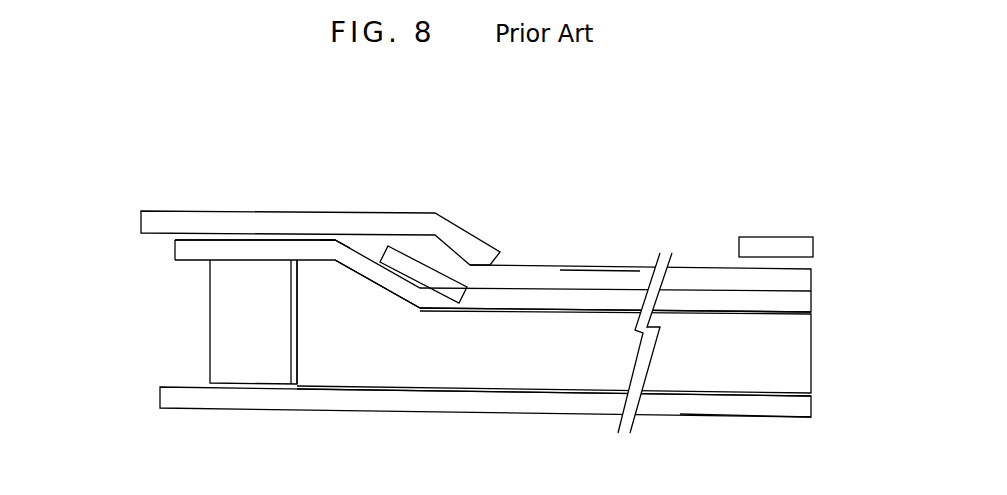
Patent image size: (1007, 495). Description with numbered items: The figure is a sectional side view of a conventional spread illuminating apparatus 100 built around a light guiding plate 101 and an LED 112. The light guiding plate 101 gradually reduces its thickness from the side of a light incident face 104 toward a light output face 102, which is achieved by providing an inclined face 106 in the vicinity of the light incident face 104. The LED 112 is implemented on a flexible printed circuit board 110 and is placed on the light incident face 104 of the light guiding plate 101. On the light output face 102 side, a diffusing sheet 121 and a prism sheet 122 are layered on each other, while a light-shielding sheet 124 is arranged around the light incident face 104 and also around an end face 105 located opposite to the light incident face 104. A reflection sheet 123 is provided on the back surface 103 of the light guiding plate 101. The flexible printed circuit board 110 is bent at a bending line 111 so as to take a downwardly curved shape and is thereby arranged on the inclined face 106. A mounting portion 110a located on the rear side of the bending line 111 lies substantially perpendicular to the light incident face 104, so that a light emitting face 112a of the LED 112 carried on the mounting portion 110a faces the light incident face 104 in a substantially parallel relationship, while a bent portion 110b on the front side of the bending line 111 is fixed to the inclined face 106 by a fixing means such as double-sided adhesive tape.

The spread illuminating apparatus 100 is at (137, 110).
The light-shielding sheet 124 is at (165, 218).
The flexible printed circuit board 110 is at (172, 250).
The mounting portion 110a is at (250, 250).
The bending line 111 is at (340, 244).
The bent portion 110b is at (362, 259).
The inclined face 106 is at (408, 280).
The light output face 102 is at (596, 302).
The prism sheet 122 is at (812, 275).
The diffusing sheet 121 is at (802, 304).
The light guiding plate 101 is at (790, 355).
The end face 105 is at (812, 380).
The LED 112 is at (228, 321).
The light emitting face 112a is at (296, 299).
The light incident face 104 is at (290, 350).
The back surface 103 is at (562, 395).
The reflection sheet 123 is at (722, 412).